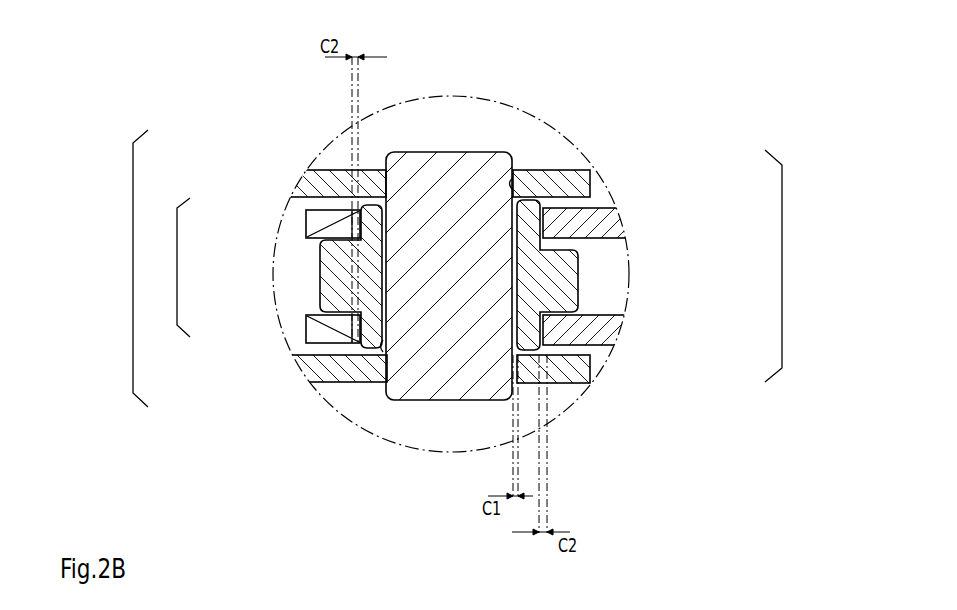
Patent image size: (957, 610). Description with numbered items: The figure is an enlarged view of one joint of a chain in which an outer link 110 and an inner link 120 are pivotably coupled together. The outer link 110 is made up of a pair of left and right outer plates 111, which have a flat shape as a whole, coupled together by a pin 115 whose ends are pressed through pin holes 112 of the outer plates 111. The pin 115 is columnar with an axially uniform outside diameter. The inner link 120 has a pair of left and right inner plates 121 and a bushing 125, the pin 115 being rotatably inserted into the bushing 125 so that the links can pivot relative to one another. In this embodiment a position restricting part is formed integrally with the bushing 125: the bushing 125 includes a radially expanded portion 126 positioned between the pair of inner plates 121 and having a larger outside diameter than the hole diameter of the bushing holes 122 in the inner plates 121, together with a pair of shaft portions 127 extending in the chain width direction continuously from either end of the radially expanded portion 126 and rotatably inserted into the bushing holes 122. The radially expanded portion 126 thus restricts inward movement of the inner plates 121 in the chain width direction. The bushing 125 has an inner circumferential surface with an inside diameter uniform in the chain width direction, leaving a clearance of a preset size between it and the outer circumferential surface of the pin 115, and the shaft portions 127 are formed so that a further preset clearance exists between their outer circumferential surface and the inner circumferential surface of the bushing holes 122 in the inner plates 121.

The outer link 110 is at (556, 285).
The outer plate 111 is at (598, 184).
The pin hole 112 is at (521, 165).
The pin 115 is at (490, 268).
The inner link 120 is at (242, 272).
The inner plate 121 is at (322, 197).
The bushing hole 122 is at (540, 188).
The bushing 125 is at (262, 276).
The radially expanded portion 126 is at (342, 289).
The shaft portion 127 is at (325, 229).